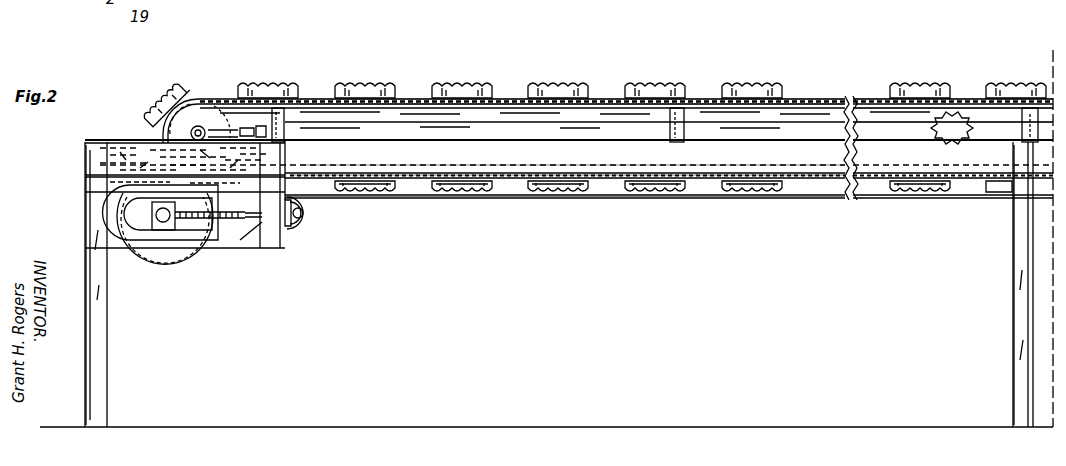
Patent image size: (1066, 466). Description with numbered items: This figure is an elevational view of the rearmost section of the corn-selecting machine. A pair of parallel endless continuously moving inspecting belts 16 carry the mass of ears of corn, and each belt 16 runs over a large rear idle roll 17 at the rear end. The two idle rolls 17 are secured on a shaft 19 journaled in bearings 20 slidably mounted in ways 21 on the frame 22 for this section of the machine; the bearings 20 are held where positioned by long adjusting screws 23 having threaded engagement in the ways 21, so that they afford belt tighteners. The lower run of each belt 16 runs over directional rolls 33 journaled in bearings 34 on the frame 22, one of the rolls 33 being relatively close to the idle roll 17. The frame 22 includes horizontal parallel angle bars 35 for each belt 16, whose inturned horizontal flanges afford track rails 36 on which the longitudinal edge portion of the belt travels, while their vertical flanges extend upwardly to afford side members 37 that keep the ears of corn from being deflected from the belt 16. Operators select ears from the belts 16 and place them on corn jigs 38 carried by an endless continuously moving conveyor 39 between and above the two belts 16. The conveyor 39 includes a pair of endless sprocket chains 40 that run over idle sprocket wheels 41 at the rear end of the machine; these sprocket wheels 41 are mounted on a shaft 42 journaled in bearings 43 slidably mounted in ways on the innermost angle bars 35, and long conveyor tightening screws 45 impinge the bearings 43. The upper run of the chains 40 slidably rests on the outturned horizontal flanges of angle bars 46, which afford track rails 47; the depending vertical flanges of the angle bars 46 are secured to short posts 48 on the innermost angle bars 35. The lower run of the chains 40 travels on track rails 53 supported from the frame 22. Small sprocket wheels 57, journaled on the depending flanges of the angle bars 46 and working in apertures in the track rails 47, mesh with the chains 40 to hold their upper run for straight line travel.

The inspecting belt 16 is at (853, 166).
The rear idle roll 17 is at (165, 268).
The shaft 19 is at (198, 248).
The bearing 20 is at (130, 213).
The way 21 is at (160, 240).
The frame 22 is at (85, 150).
The adjusting screw 23 is at (240, 235).
The directional roll 33 is at (314, 213).
The bearing 34 is at (312, 225).
The angle bar 35 is at (457, 143).
The track rail 36 is at (490, 198).
The side member 37 is at (540, 148).
The corn jig 38 is at (365, 90).
The conveyor 39 is at (505, 92).
The sprocket chain 40 is at (600, 100).
The idle sprocket wheel 41 is at (204, 104).
The shaft 42 is at (212, 128).
The bearing 43 is at (160, 128).
The conveyor tightening screw 45 is at (268, 142).
The angle bar 46 is at (790, 100).
The track rail 47 is at (860, 104).
The short post 48 is at (285, 130).
The track rail 53 is at (822, 188).
The small sprocket wheel 57 is at (968, 127).